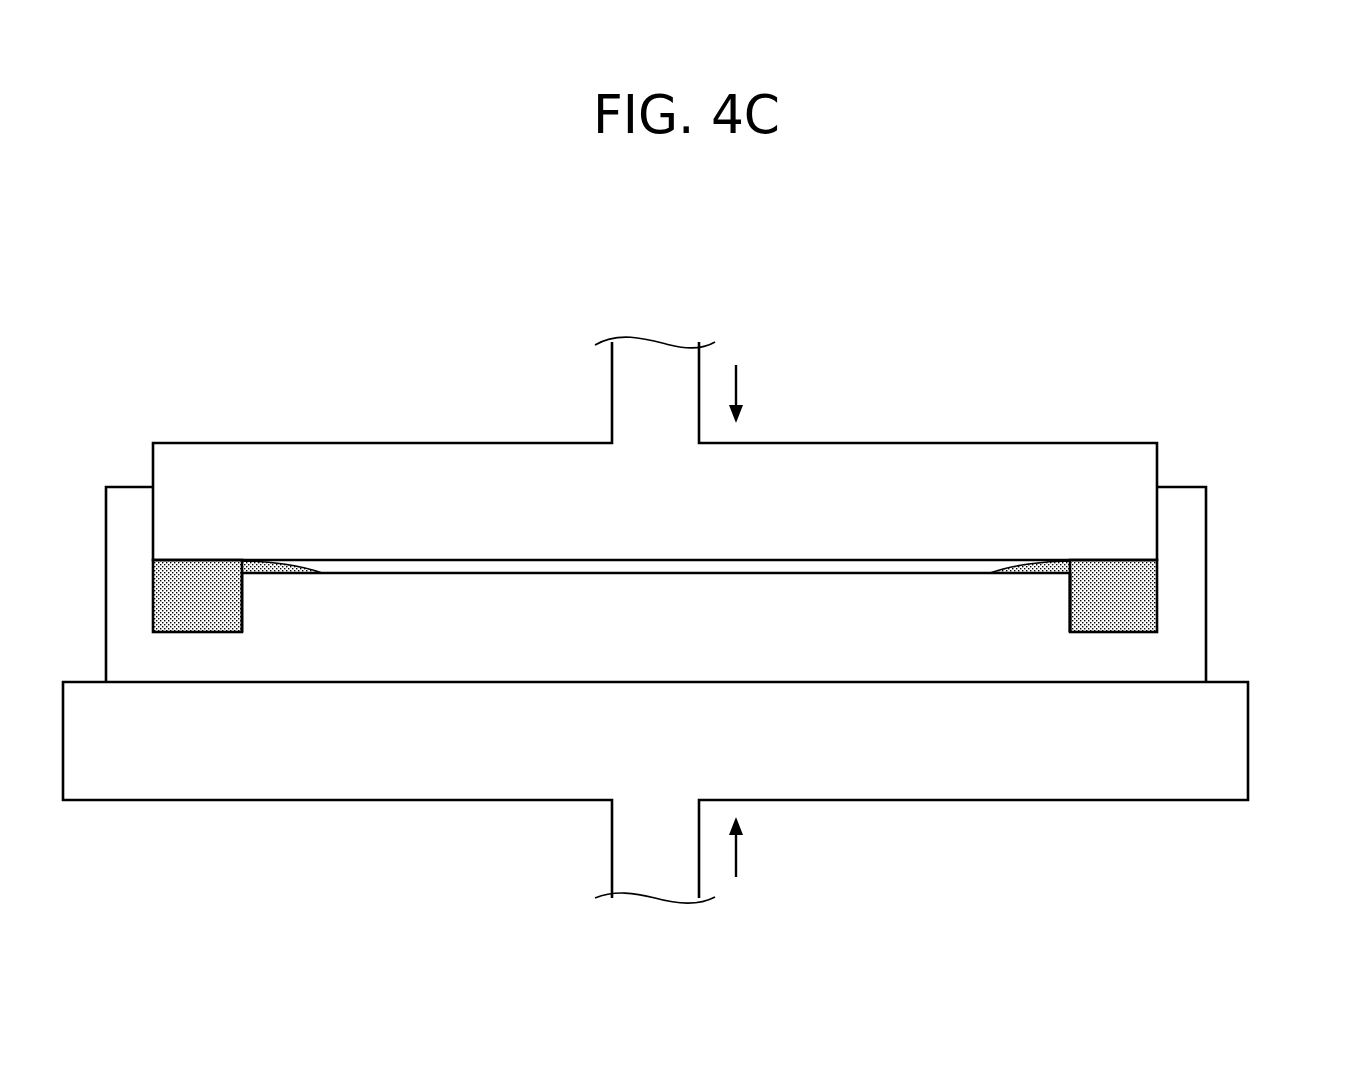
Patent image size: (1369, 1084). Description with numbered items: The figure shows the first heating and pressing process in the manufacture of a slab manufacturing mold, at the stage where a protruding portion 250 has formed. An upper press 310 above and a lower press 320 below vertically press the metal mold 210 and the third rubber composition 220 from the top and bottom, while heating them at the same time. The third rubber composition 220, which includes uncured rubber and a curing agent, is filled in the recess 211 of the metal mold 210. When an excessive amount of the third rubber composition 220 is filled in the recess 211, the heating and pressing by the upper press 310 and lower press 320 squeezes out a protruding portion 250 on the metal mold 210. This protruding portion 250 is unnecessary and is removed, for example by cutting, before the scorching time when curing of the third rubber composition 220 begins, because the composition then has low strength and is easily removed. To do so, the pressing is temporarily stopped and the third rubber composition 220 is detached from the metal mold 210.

The upper press 310 is at (1069, 457).
The lower press 320 is at (1233, 738).
The metal mold 210 is at (1190, 644).
The recess 211 is at (1073, 613).
The third rubber composition 220 is at (1143, 598).
The protruding portion 250 is at (281, 568).